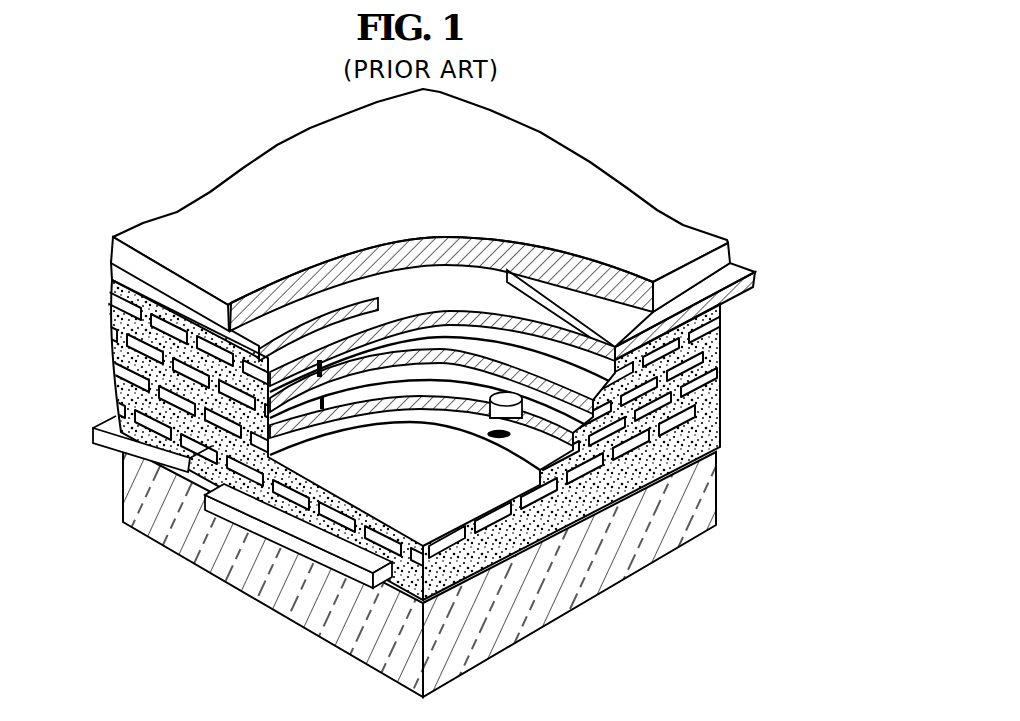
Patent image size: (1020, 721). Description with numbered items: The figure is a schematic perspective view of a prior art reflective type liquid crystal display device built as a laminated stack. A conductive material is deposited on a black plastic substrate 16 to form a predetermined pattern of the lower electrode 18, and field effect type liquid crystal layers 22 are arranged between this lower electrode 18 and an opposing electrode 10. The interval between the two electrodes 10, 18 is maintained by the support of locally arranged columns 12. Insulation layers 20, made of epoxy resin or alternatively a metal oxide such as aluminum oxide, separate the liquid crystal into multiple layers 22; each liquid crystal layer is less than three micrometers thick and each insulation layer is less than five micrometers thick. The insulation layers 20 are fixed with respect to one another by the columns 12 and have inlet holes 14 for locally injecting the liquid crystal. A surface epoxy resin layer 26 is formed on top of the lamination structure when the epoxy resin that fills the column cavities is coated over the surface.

The electrode 10 is at (110, 289).
The columns 12 is at (349, 428).
The inlet holes 14 is at (475, 418).
The black plastic substrate 16 is at (720, 489).
The lower electrode 18 is at (105, 428).
The insulation layers 20 is at (727, 318).
The liquid crystal layers 22 is at (722, 338).
The surface epoxy resin layer 26 is at (668, 228).